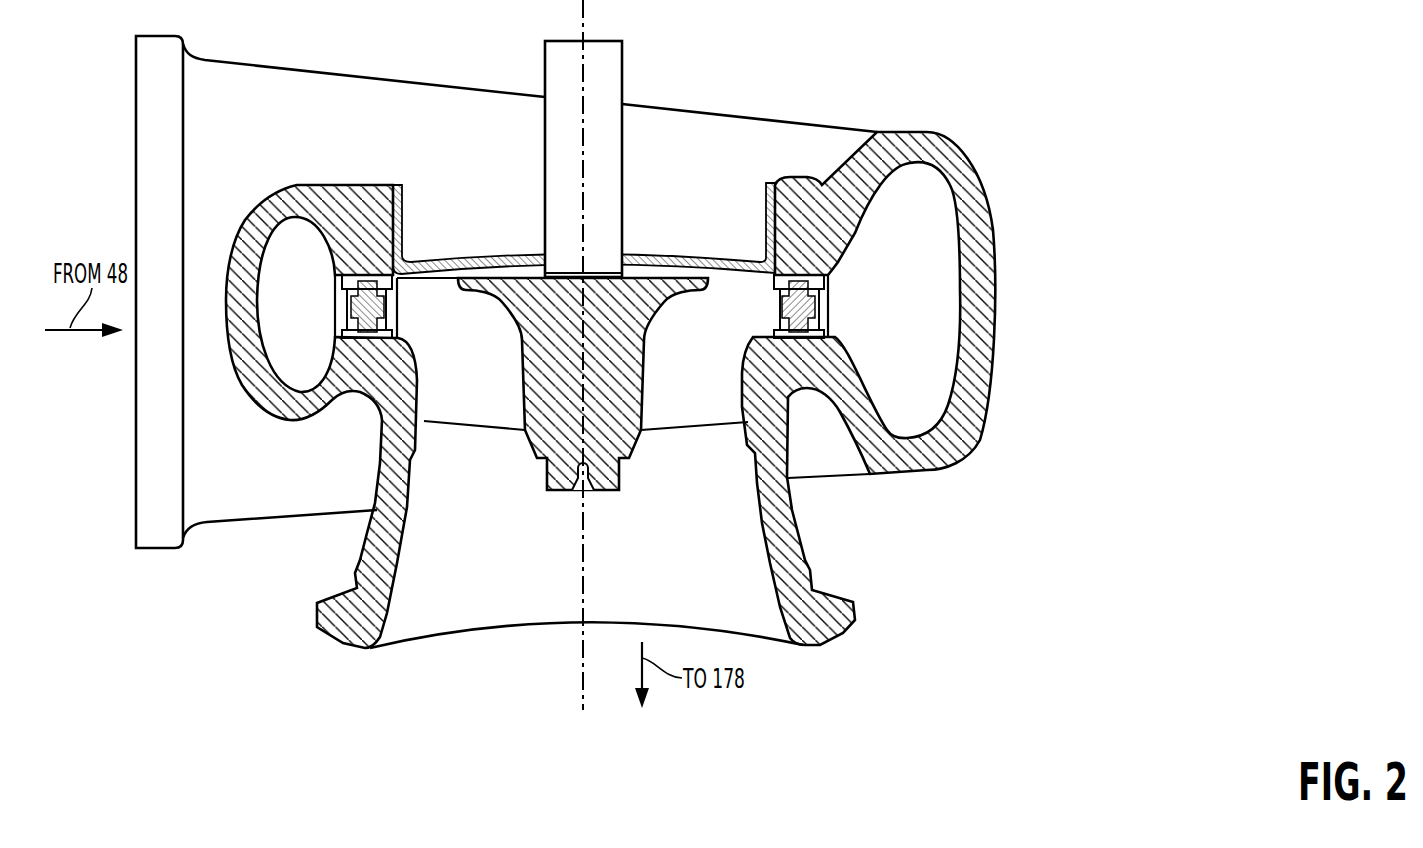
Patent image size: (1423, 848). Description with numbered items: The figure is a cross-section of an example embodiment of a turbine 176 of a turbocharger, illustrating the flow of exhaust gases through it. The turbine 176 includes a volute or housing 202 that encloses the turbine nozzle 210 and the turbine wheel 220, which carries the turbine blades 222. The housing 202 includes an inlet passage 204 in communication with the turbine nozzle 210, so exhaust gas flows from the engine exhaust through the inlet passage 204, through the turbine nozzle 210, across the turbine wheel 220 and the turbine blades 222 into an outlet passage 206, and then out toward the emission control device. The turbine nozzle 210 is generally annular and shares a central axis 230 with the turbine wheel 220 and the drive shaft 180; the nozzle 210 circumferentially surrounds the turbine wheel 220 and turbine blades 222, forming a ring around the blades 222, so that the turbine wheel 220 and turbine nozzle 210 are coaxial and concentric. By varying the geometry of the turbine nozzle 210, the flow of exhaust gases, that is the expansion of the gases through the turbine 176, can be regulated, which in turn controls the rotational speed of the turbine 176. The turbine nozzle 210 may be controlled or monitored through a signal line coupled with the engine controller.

The turbine 176 is at (912, 102).
The drive shaft 180 is at (622, 57).
The housing 202 is at (740, 118).
The inlet passage 204 is at (312, 368).
The outlet passage 206 is at (511, 538).
The turbine nozzle 210 is at (330, 308).
The turbine wheel 220 is at (603, 492).
The turbine blades 222 is at (687, 418).
The central axis 230 is at (577, 648).